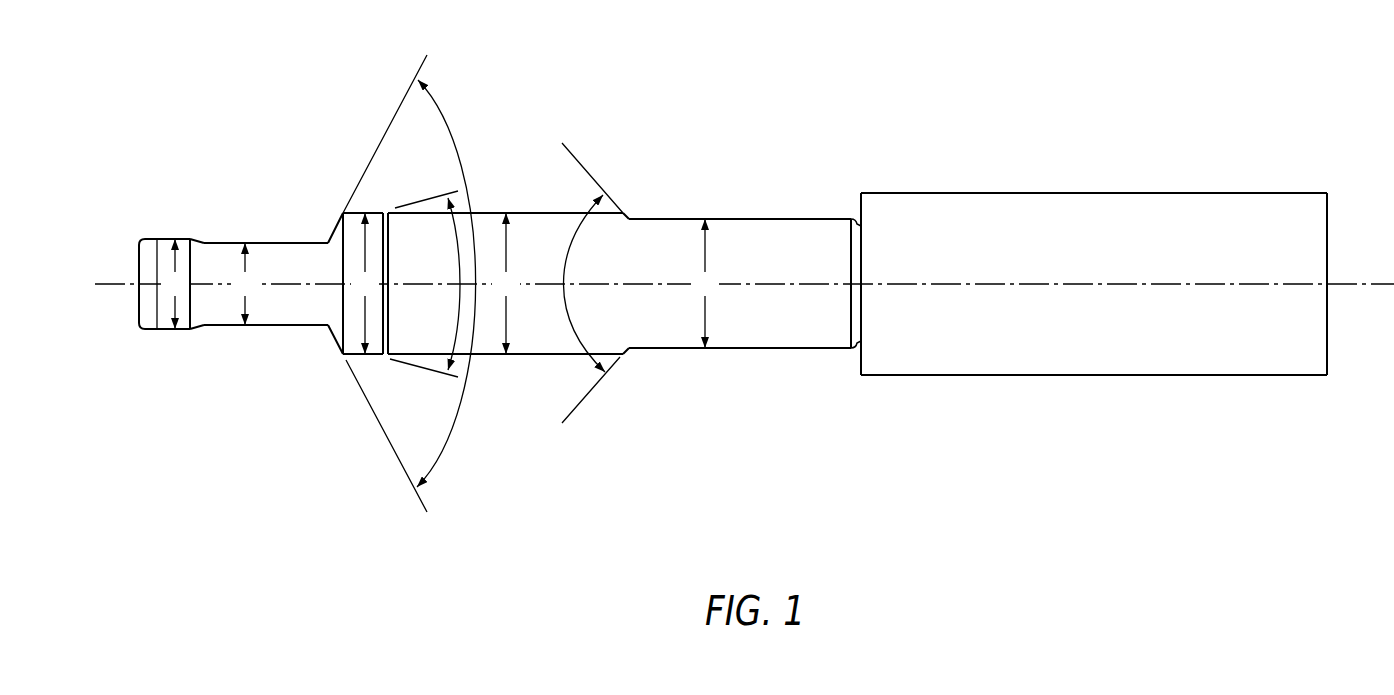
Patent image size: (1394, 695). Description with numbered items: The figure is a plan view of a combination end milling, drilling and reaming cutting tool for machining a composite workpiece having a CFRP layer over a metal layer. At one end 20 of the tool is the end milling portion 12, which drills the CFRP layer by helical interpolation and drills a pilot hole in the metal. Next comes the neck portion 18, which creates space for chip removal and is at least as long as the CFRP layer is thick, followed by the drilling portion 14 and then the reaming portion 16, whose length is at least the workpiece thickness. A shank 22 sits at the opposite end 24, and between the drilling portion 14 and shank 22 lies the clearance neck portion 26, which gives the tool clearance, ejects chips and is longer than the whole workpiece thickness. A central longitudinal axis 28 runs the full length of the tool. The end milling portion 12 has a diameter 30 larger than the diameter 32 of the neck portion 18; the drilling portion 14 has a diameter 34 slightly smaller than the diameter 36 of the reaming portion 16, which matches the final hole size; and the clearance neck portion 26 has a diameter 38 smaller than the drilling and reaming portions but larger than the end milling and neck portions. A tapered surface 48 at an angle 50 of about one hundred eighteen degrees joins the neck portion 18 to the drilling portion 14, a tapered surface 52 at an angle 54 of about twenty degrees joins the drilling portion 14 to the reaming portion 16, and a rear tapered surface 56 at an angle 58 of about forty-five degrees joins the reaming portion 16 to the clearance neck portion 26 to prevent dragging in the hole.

The end milling portion 12 is at (144, 231).
The drilling portion 14 is at (344, 272).
The reaming portion 16 is at (506, 283).
The neck portion 18 is at (263, 195).
The end 20 is at (118, 248).
The shank 22 is at (1127, 242).
The opposite end 24 is at (1350, 230).
The clearance neck portion 26 is at (748, 200).
The central longitudinal axis 28 is at (1365, 283).
The diameter of the end milling portion 30 is at (175, 284).
The diameter of the neck portion 32 is at (245, 284).
The diameter of the drilling portion 34 is at (365, 283).
The diameter of the reaming portion 36 is at (506, 283).
The diameter of the clearance neck portion 38 is at (705, 283).
The tapered surface 48 is at (337, 224).
The angle 50 is at (458, 153).
The tapered surface 52 is at (388, 287).
The angle 54 is at (458, 259).
The tapered surface 56 is at (626, 216).
The angle 58 is at (572, 250).